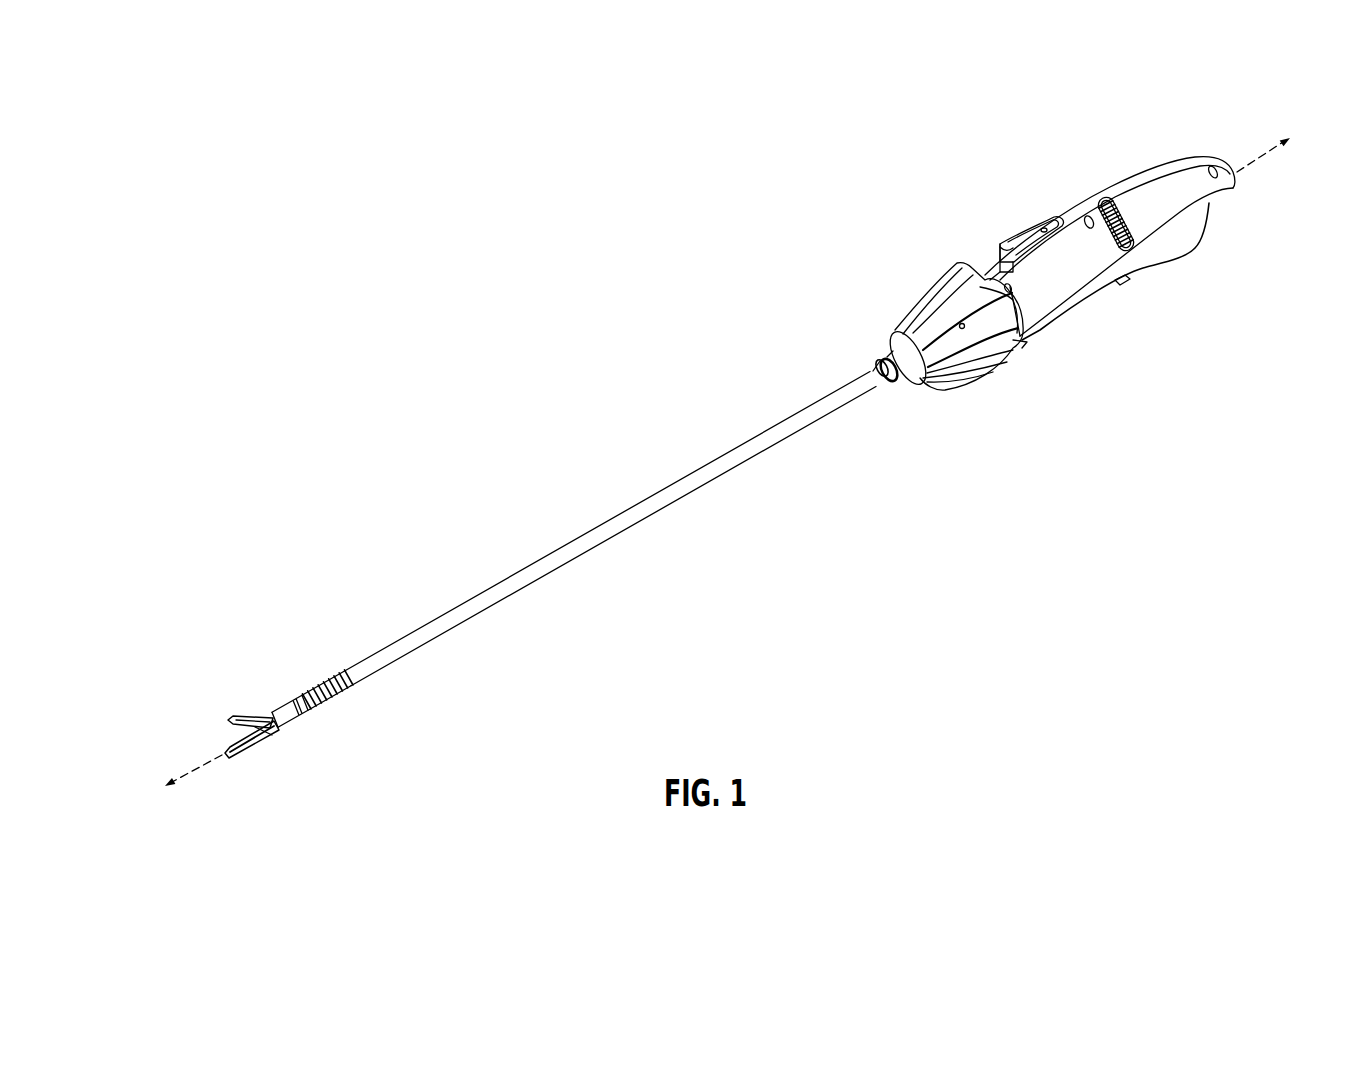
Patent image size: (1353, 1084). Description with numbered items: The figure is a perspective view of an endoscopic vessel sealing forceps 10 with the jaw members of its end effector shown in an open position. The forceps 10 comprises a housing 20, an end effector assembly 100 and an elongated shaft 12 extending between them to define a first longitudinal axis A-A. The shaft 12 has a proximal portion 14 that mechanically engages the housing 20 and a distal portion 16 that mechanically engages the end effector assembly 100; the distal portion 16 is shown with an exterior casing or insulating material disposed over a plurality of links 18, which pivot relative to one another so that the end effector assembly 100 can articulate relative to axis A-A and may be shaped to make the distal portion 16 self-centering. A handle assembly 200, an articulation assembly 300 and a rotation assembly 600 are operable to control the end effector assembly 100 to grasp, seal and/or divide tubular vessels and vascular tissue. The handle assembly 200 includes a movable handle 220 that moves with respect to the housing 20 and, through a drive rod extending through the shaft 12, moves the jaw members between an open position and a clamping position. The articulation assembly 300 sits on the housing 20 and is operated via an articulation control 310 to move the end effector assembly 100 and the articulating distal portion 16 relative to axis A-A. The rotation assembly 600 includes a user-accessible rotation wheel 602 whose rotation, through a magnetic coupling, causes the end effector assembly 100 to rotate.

The endoscopic vessel sealing forceps 10 is at (591, 380).
The elongated shaft 12 is at (543, 565).
The proximal portion 14 is at (859, 357).
The distal portion 16 is at (294, 668).
The links 18 is at (330, 698).
The housing 20 is at (1173, 172).
The end effector assembly 100 is at (187, 698).
The handle assembly 200 is at (1105, 316).
The movable handle 220 is at (1192, 245).
The articulation assembly 300 is at (1147, 250).
The articulation control 310 is at (1112, 196).
The rotation assembly 600 is at (896, 272).
The rotation wheel 602 is at (987, 360).